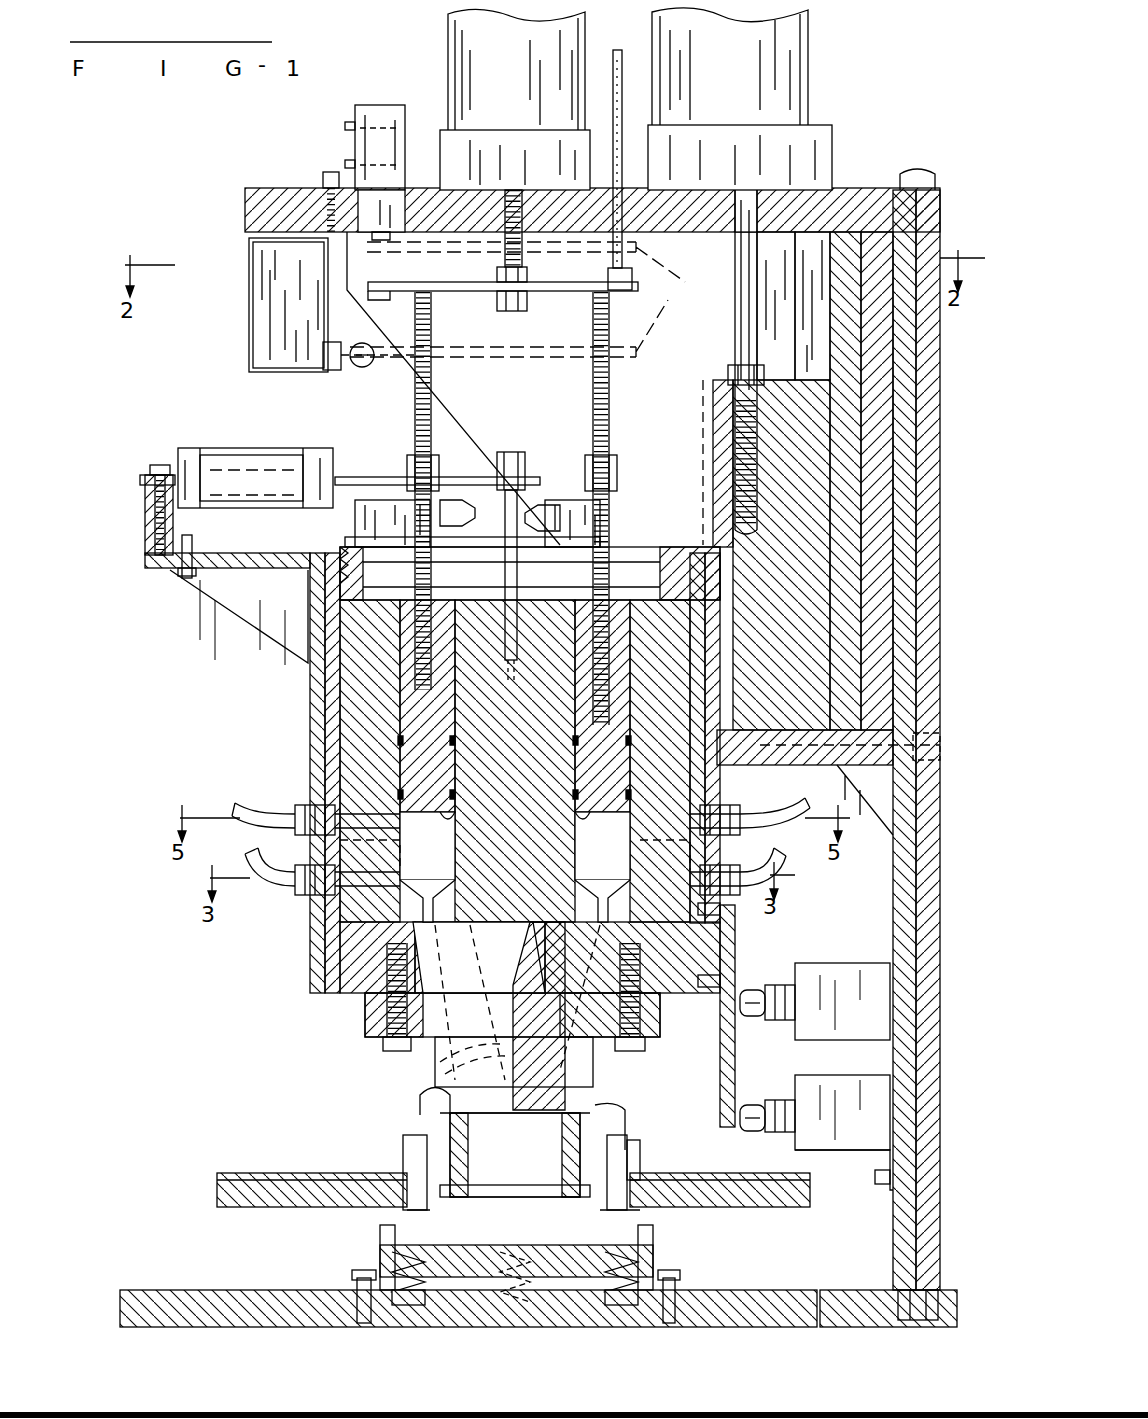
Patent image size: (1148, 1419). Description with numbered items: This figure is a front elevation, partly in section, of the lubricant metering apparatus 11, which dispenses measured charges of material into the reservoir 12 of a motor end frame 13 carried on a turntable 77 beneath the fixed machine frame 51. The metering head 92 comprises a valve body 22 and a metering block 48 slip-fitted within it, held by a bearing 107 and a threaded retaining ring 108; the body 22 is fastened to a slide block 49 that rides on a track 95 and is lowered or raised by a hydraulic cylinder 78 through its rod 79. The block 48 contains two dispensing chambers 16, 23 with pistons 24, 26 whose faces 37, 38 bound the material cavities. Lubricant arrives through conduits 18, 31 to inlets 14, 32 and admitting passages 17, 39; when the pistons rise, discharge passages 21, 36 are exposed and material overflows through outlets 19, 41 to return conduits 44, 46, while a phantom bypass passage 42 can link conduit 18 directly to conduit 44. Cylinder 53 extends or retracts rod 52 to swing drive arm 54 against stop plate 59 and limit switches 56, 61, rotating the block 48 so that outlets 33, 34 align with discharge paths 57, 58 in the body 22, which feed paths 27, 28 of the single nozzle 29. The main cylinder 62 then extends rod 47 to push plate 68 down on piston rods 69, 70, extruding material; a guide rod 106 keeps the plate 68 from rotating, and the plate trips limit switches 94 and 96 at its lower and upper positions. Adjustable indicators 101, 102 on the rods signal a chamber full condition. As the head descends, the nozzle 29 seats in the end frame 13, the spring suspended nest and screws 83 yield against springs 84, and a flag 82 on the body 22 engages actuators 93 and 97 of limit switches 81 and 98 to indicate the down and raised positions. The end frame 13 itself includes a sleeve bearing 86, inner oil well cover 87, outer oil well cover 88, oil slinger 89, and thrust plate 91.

The apparatus 11 is at (204, 414).
The reservoir 12 is at (580, 1098).
The motor end frame 13 is at (632, 1160).
The inlet 14 is at (367, 863).
The dispensing chamber 16 is at (445, 855).
The material admitting passage 17 is at (385, 886).
The conduit 18 is at (250, 853).
The overflow outlet port 19 is at (345, 812).
The discharge passage 21 is at (380, 814).
The body 22 is at (315, 985).
The dispensing chamber 23 is at (576, 835).
The piston 24 is at (440, 712).
The piston 26 is at (580, 722).
The discharge path 27 is at (440, 1072).
The discharge path 28 is at (555, 1040).
The nozzle 29 is at (430, 1048).
The conduit 31 is at (770, 862).
The inlet 32 is at (690, 863).
The outlet 33 is at (435, 901).
The outlet 34 is at (586, 901).
The discharge passage 36 is at (670, 820).
The piston face 37 is at (465, 810).
The piston face 38 is at (575, 830).
The passageway 39 is at (676, 886).
The overflow outlet 41 is at (672, 812).
The bypass passage 42 is at (427, 846).
The discharge conduit 44 is at (258, 826).
The return conduit 46 is at (786, 810).
The main cylinder rod 47 is at (528, 268).
The metering block 48 is at (524, 756).
The slide block 49 is at (768, 735).
The machine frame 51 is at (893, 1222).
The rod 52 is at (390, 477).
The cylinder 53 is at (276, 460).
The drive arm 54 is at (508, 548).
The limit switch 56 is at (540, 500).
The discharge path 57 is at (540, 505).
The discharge path 58 is at (562, 1016).
The stop plate 59 is at (530, 470).
The limit switch 61 is at (455, 500).
The main cylinder 62 is at (524, 54).
The plate 68 is at (526, 299).
The piston rod 69 is at (432, 400).
The piston rod 70 is at (606, 402).
The turntable 77 is at (255, 1290).
The hydraulic cylinder 78 is at (805, 72).
The rod 79 is at (735, 312).
The limit switch 81 is at (860, 1150).
The flag 82 is at (738, 1090).
The screws 83 is at (735, 930).
The springs 84 is at (515, 1287).
The sleeve bearing 86 is at (468, 1155).
The inner oil well cover 87 is at (476, 1210).
The outer oil well cover 88 is at (626, 1136).
The oil slinger 89 is at (478, 1200).
The thrust plate 91 is at (425, 1110).
The metering head 92 is at (338, 1005).
The limit switch actuator 93 is at (762, 1132).
The limit switch 94 is at (350, 362).
The track 95 is at (850, 767).
The limit switch 96 is at (398, 130).
The switch actuator 97 is at (752, 992).
The limit switch 98 is at (832, 963).
The adjustable indicator 101 is at (428, 455).
The adjustable indicator 102 is at (628, 440).
The guide rod 106 is at (620, 62).
The bearing 107 is at (472, 560).
The retaining ring 108 is at (345, 556).